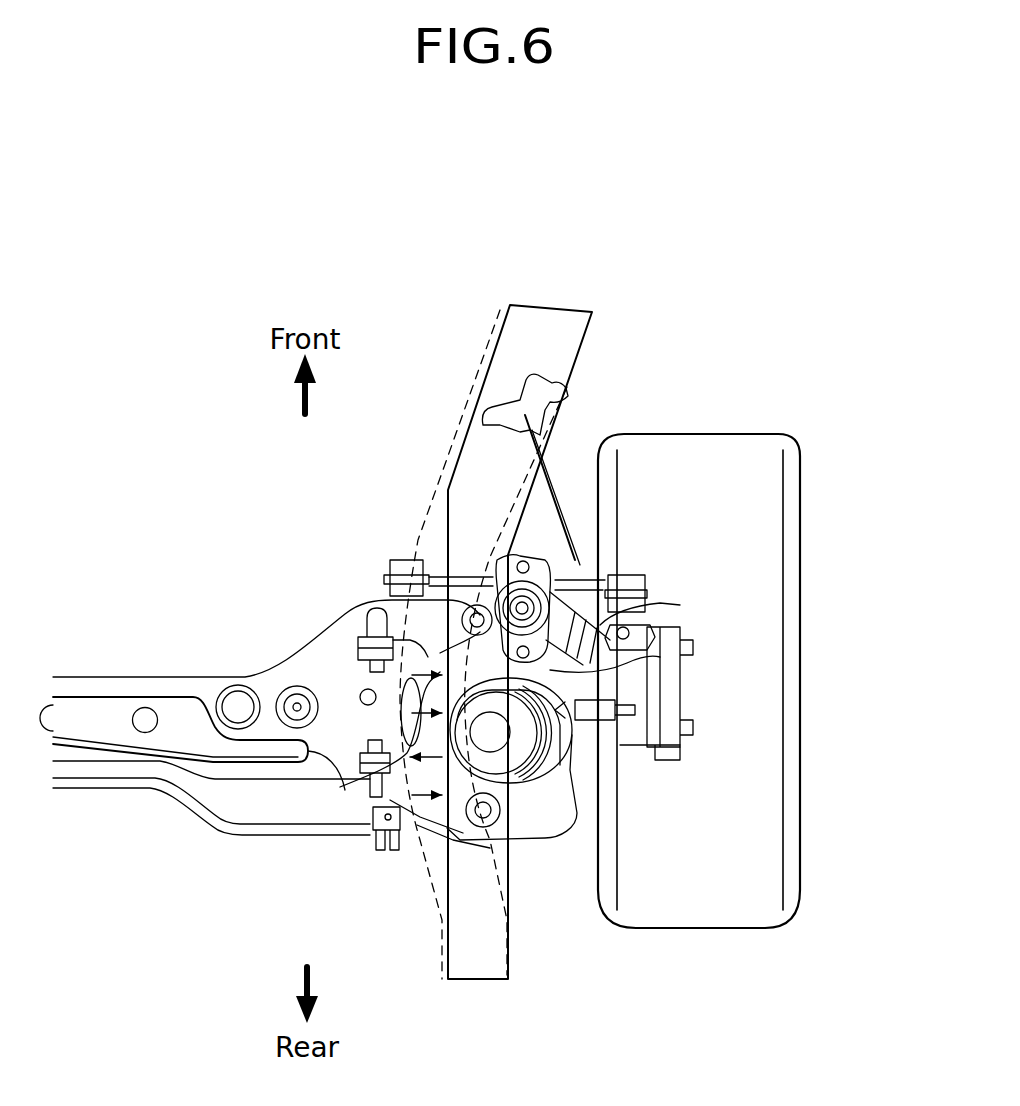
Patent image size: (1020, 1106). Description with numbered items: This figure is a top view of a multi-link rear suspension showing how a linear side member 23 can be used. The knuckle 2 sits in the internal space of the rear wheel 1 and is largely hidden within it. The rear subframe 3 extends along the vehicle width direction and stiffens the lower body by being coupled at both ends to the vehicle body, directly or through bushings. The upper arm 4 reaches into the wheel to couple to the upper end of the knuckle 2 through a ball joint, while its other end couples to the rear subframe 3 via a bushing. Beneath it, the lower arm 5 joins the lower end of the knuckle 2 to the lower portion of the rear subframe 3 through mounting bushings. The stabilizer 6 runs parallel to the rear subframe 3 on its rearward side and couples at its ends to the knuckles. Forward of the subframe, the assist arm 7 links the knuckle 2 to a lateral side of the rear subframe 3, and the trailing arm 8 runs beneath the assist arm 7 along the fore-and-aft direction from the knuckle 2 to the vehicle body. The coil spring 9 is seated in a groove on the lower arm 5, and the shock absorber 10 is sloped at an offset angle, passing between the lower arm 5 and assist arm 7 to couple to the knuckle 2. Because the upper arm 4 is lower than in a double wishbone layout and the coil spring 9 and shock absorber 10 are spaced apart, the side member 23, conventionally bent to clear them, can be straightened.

The rear wheel 1 is at (790, 521).
The knuckle 2 is at (667, 677).
The rear subframe 3 is at (155, 694).
The upper arm 4 is at (605, 723).
The lower arm 5 is at (557, 770).
The stabilizer 6 is at (191, 810).
The assist arm 7 is at (568, 567).
The trailing arm 8 is at (565, 490).
The coil spring 9 is at (542, 728).
The shock absorber 10 is at (627, 628).
The side member 23 is at (508, 952).